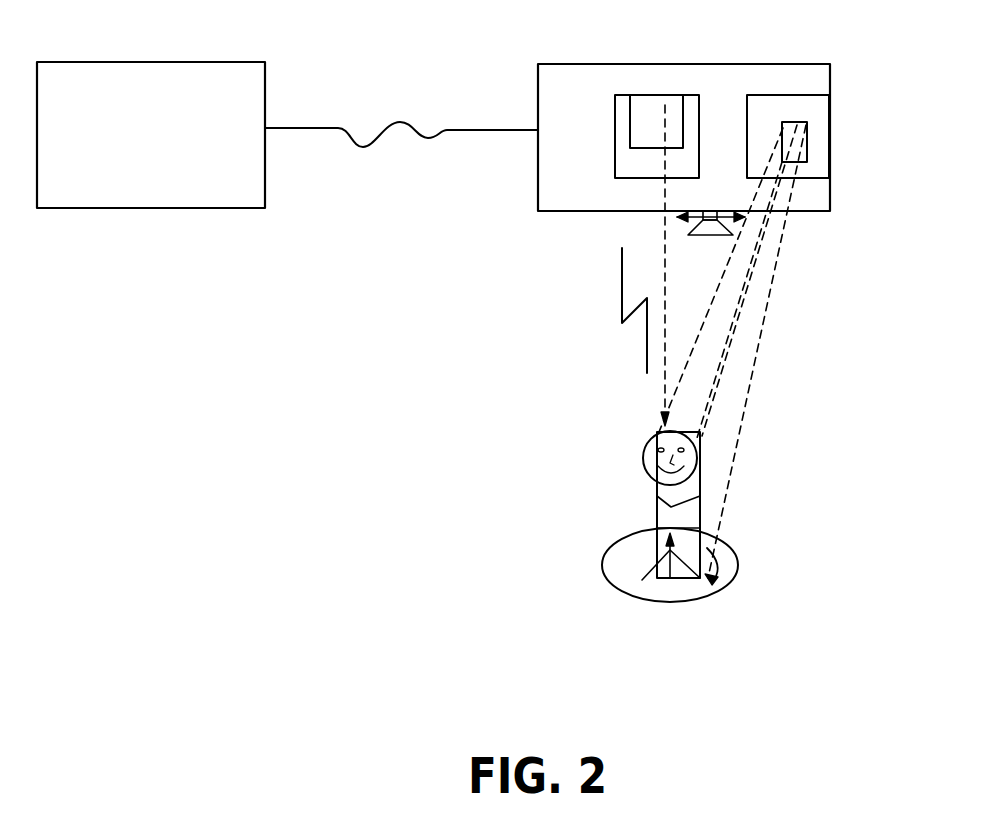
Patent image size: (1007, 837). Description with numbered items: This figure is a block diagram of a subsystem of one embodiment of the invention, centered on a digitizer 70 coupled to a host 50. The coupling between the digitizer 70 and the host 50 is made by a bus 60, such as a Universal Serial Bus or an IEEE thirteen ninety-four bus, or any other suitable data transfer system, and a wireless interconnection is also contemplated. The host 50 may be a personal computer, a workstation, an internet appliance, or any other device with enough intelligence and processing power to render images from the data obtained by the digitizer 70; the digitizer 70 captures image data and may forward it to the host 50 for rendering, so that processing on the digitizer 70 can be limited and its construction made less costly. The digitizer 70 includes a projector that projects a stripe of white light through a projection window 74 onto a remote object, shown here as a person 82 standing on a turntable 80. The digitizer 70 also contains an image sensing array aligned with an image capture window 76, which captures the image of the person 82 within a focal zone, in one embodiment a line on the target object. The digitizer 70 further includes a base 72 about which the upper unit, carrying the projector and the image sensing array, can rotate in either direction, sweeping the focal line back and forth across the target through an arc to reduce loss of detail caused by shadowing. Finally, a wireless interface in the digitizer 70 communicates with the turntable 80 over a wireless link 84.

The host 50 is at (182, 62).
The bus 60 is at (305, 126).
The digitizer 70 is at (690, 64).
The base 72 is at (692, 240).
The projection window 74 is at (823, 133).
The image capture window 76 is at (700, 121).
The turntable 80 is at (736, 556).
The person 82 is at (647, 496).
The wireless link 84 is at (621, 289).